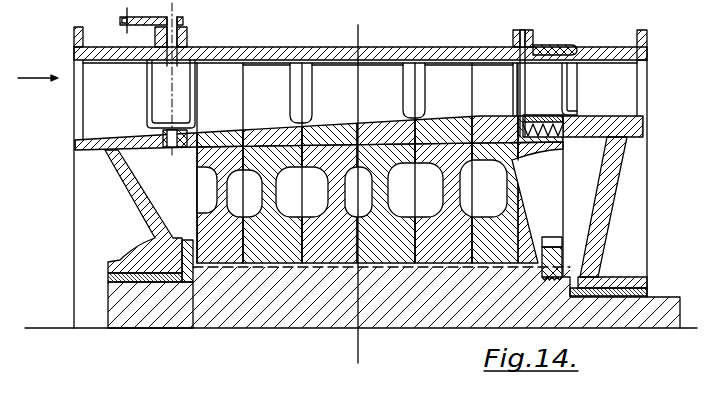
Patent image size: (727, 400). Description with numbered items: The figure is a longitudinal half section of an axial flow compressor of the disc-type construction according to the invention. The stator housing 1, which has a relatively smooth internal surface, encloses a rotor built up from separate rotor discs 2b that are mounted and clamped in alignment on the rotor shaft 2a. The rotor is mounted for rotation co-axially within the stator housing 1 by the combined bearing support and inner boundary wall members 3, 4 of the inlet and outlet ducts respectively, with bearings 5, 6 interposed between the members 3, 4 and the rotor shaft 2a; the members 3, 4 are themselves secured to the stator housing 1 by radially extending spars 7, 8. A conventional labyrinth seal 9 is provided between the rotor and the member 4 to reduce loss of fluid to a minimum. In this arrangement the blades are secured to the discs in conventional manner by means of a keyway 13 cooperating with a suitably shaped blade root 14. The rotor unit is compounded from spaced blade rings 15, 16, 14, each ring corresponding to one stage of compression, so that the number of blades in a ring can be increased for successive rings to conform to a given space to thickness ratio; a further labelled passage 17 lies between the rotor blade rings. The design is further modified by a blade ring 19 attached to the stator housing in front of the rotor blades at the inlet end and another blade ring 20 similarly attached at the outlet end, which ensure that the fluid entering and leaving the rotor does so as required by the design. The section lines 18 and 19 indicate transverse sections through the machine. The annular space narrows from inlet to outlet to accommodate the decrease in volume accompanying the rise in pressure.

The stator housing 1 is at (298, 62).
The rotor shaft 2a is at (133, 328).
The rotor disc 2b is at (218, 245).
The combined bearing support and inner boundary wall member 3 is at (121, 175).
The combined bearing support and inner boundary wall member 4 is at (611, 192).
The bearing 5 is at (140, 274).
The bearing 6 is at (608, 283).
The radially extending spar 7 is at (92, 72).
The radially extending spar 8 is at (628, 72).
The labyrinth seal 9 is at (565, 130).
The keyway 13 is at (217, 150).
The blade root 14 is at (281, 134).
The blade ring 15 is at (267, 70).
The blade ring 16 is at (331, 70).
The stator passage 17 is at (453, 73).
The section line 18- 18 is at (358, 25).
The blade ring 19 is at (182, 70).
The blade ring 20 is at (565, 50).